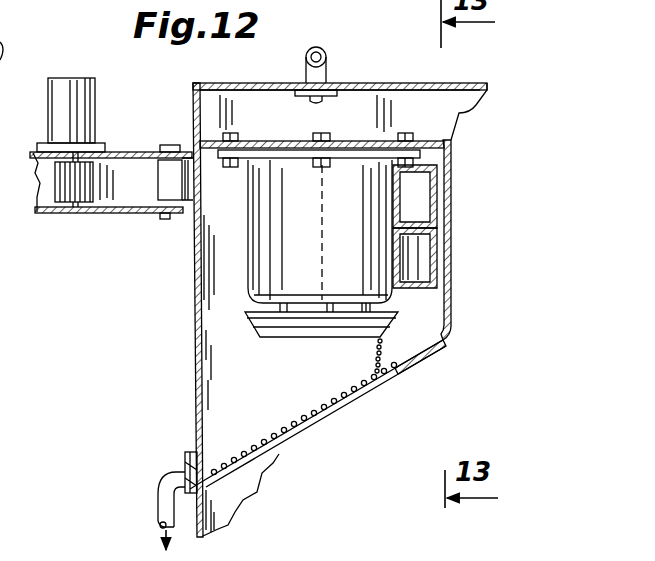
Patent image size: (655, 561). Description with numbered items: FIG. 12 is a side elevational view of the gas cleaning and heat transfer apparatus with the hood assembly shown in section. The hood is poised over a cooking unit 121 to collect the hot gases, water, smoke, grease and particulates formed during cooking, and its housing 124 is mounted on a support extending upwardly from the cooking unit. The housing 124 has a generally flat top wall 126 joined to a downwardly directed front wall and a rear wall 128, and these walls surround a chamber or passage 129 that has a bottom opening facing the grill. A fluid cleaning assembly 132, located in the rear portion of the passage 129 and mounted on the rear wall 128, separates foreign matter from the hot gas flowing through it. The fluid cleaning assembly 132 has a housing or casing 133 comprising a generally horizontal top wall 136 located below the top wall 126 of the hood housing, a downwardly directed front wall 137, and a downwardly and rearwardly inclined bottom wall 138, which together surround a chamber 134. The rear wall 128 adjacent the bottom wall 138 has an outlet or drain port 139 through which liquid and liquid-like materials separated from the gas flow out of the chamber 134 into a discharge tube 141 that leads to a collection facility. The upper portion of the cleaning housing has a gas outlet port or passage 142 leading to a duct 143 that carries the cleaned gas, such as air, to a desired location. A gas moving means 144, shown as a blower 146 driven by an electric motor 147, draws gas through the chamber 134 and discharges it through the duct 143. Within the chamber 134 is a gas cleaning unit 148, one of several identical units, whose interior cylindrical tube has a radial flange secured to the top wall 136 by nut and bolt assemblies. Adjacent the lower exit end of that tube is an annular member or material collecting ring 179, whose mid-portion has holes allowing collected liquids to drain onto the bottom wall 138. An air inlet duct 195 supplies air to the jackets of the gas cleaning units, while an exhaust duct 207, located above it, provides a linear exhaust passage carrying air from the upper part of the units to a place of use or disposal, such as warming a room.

The cooking unit 121 is at (4, 384).
The housing 124 is at (348, 84).
The top wall 126 is at (249, 84).
The rear wall 128 is at (194, 292).
The chamber or passage 129 is at (210, 94).
The fluid cleaning assembly 132 is at (191, 403).
The housing or casing 133 is at (345, 409).
The chamber 134 is at (241, 450).
The top wall 136 is at (283, 141).
The front wall 137 is at (452, 308).
The bottom wall 138 is at (293, 428).
The outlet or drain port 139 is at (204, 459).
The discharge tube 141 is at (167, 497).
The gas outlet port or passage 142 is at (170, 180).
The duct 143 is at (128, 150).
The gas moving means 144 is at (46, 131).
The blower 146 is at (62, 198).
The electric motor 147 is at (88, 90).
The gas cleaning unit 148 is at (320, 236).
The annular member or material collecting ring 179 is at (354, 334).
The air inlet duct 195 is at (438, 256).
The exhaust duct 207 is at (437, 212).